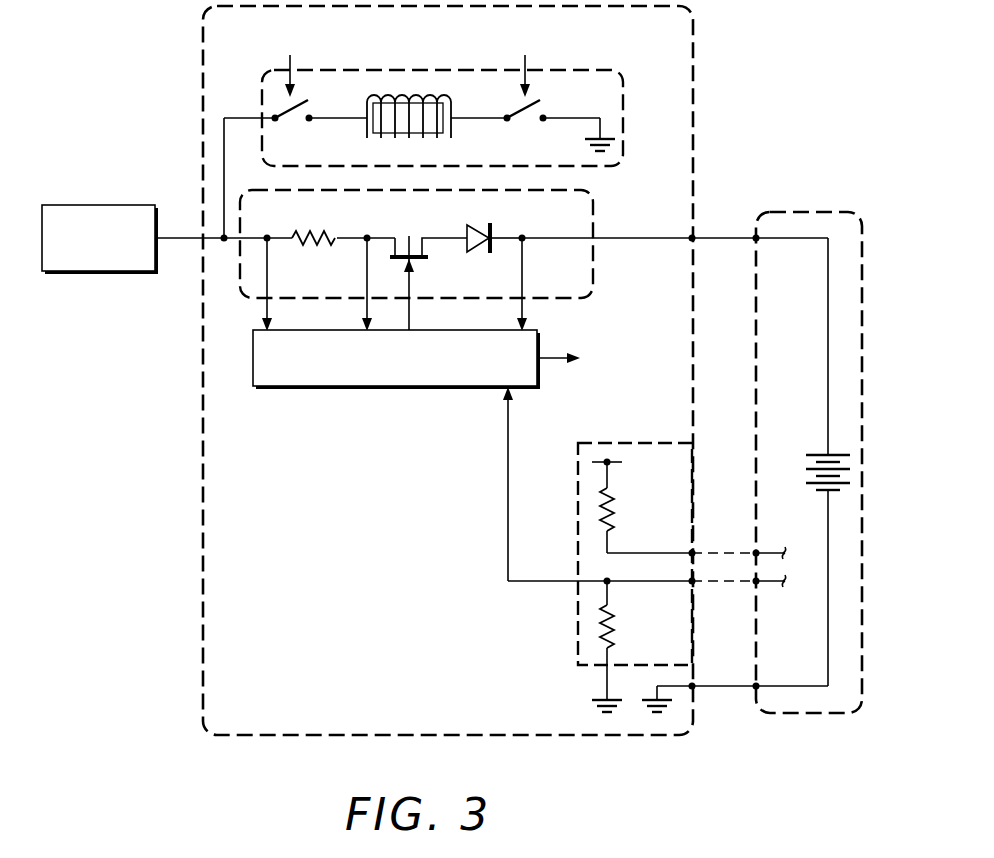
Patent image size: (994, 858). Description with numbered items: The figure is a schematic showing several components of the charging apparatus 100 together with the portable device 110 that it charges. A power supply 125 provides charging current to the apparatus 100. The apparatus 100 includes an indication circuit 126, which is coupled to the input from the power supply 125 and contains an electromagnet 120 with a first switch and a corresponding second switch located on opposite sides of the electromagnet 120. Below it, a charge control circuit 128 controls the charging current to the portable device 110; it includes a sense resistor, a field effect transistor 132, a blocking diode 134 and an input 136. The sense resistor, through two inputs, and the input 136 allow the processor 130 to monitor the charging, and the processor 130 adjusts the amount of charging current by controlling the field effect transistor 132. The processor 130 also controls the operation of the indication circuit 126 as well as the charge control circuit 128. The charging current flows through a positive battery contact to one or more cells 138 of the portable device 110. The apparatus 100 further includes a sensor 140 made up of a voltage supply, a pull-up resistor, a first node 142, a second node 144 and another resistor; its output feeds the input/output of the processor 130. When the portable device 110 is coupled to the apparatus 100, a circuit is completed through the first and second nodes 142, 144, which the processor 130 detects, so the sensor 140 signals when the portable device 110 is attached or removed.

The apparatus 100 is at (198, 430).
The portable device 110 is at (799, 190).
The electromagnet 120 is at (443, 133).
The power supply 125 is at (100, 275).
The indication circuit 126 is at (622, 172).
The charge control circuit 128 is at (600, 270).
The processor 130 is at (396, 390).
The field effect transistor 132 is at (428, 258).
The blocking diode 134 is at (466, 229).
The input 136 is at (524, 262).
The cells 138 is at (812, 455).
The sensor 140 is at (572, 619).
The first node 142 is at (692, 549).
The second node 144 is at (692, 585).